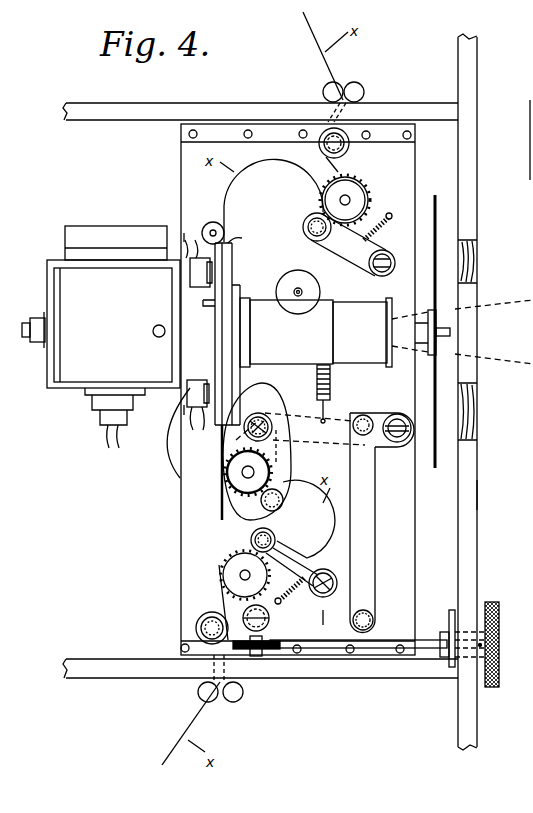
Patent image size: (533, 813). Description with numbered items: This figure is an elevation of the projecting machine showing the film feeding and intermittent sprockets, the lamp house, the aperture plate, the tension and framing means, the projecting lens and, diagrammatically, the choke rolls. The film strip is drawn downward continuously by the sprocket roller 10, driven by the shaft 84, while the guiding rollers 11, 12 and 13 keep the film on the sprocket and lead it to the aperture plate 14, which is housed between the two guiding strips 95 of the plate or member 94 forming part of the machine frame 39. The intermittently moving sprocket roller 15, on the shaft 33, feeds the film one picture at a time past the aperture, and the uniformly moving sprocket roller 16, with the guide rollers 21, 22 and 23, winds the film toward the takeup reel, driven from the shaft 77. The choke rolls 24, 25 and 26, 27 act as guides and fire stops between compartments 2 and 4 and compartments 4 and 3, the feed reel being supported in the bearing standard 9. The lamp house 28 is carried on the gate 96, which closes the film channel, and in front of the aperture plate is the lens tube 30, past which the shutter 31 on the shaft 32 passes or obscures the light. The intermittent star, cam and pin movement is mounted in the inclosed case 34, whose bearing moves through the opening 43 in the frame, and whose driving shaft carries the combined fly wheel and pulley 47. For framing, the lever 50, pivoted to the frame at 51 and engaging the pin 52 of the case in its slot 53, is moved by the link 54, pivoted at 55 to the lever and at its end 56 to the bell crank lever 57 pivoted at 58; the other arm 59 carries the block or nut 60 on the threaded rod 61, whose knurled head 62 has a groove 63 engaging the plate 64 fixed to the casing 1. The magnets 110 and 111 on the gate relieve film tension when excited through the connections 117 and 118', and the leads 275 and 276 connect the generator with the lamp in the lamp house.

The casing 1 is at (471, 180).
The compartment 2 is at (406, 60).
The compartment 3 is at (352, 736).
The compartment 4 is at (478, 500).
The bearing standard 9 is at (525, 140).
The sprocket roller 10 is at (335, 195).
The guiding roller 11 is at (348, 152).
The guiding roller 12 is at (305, 232).
The guiding roller 13 is at (208, 225).
The aperture plate 14 is at (236, 240).
The intermittently moving sprocket roller 15 is at (236, 478).
The uniformly moving sprocket roller 16 is at (226, 571).
The guide roller 21 is at (280, 506).
The guide roller 22 is at (250, 538).
The guide roller 23 is at (196, 628).
The choke roll 24 is at (361, 88).
The choke roll 25 is at (325, 88).
The choke roll 26 is at (200, 698).
The choke roll 27 is at (240, 698).
The lamp house 28 is at (77, 368).
The lens tube 30 is at (346, 302).
The shutter 31 is at (440, 226).
The shaft 32 is at (455, 331).
The shaft 33 is at (253, 472).
The inclosed case 34 is at (236, 410).
The machine frame 39 is at (404, 566).
The opening 43 is at (234, 509).
The combined fly wheel and pulley 47 is at (165, 455).
The lever 50 is at (316, 370).
The pivot 51 is at (399, 414).
The pin 52 is at (271, 420).
The slot 53 is at (218, 458).
The link 54 is at (368, 513).
The pivot 55 is at (368, 416).
The pivot end 56 is at (373, 612).
The bell crank lever 57 is at (323, 625).
The pivot 58 is at (270, 620).
The arm 59 is at (248, 650).
The block or nut 60 is at (264, 652).
The rod 61 is at (375, 642).
The knurled head 62 is at (500, 621).
The groove 63 is at (445, 663).
The plate 64 is at (447, 630).
The shaft 77 is at (240, 578).
The shaft 84 is at (352, 197).
The plate or member 94 is at (234, 276).
The guiding strip 95 is at (225, 258).
The gate 96 is at (214, 426).
The magnet 110 is at (195, 271).
The magnet 111 is at (187, 390).
The connection 117 is at (192, 235).
The connection 118' is at (161, 321).
The lead 275 is at (119, 448).
The lead 276 is at (104, 447).